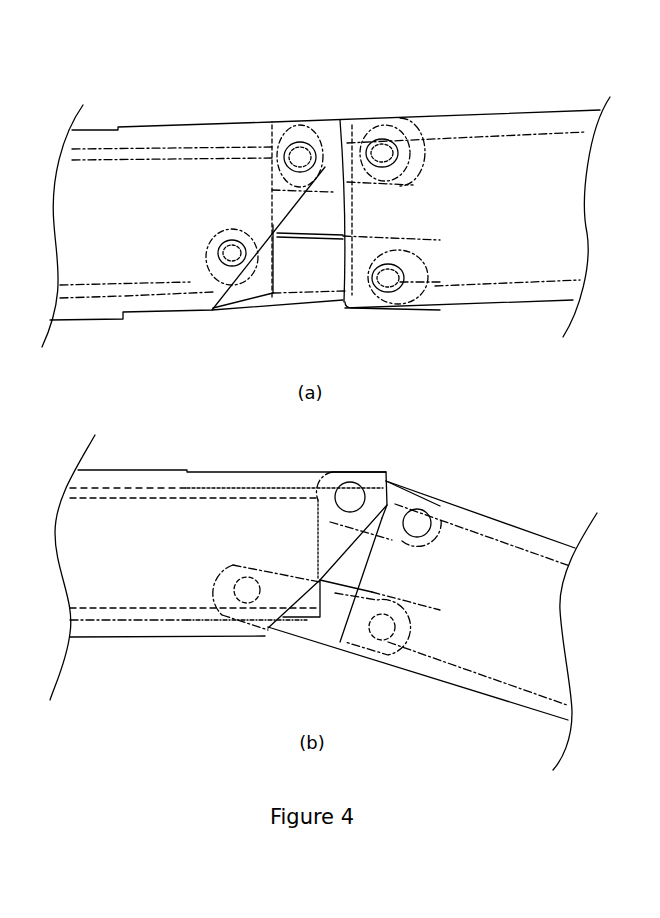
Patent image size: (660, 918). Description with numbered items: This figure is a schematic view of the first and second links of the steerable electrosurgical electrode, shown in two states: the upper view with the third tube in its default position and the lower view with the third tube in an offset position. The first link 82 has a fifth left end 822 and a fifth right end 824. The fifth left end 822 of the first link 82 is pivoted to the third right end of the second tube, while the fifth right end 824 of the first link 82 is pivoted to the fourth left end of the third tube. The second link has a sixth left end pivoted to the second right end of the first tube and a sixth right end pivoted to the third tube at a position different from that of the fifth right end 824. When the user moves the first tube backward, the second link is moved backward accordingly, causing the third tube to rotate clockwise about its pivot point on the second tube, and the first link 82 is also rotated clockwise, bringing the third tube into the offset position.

The first link 82 is at (400, 480).
The fifth left end 822 is at (352, 480).
The fifth right end 824 is at (440, 510).